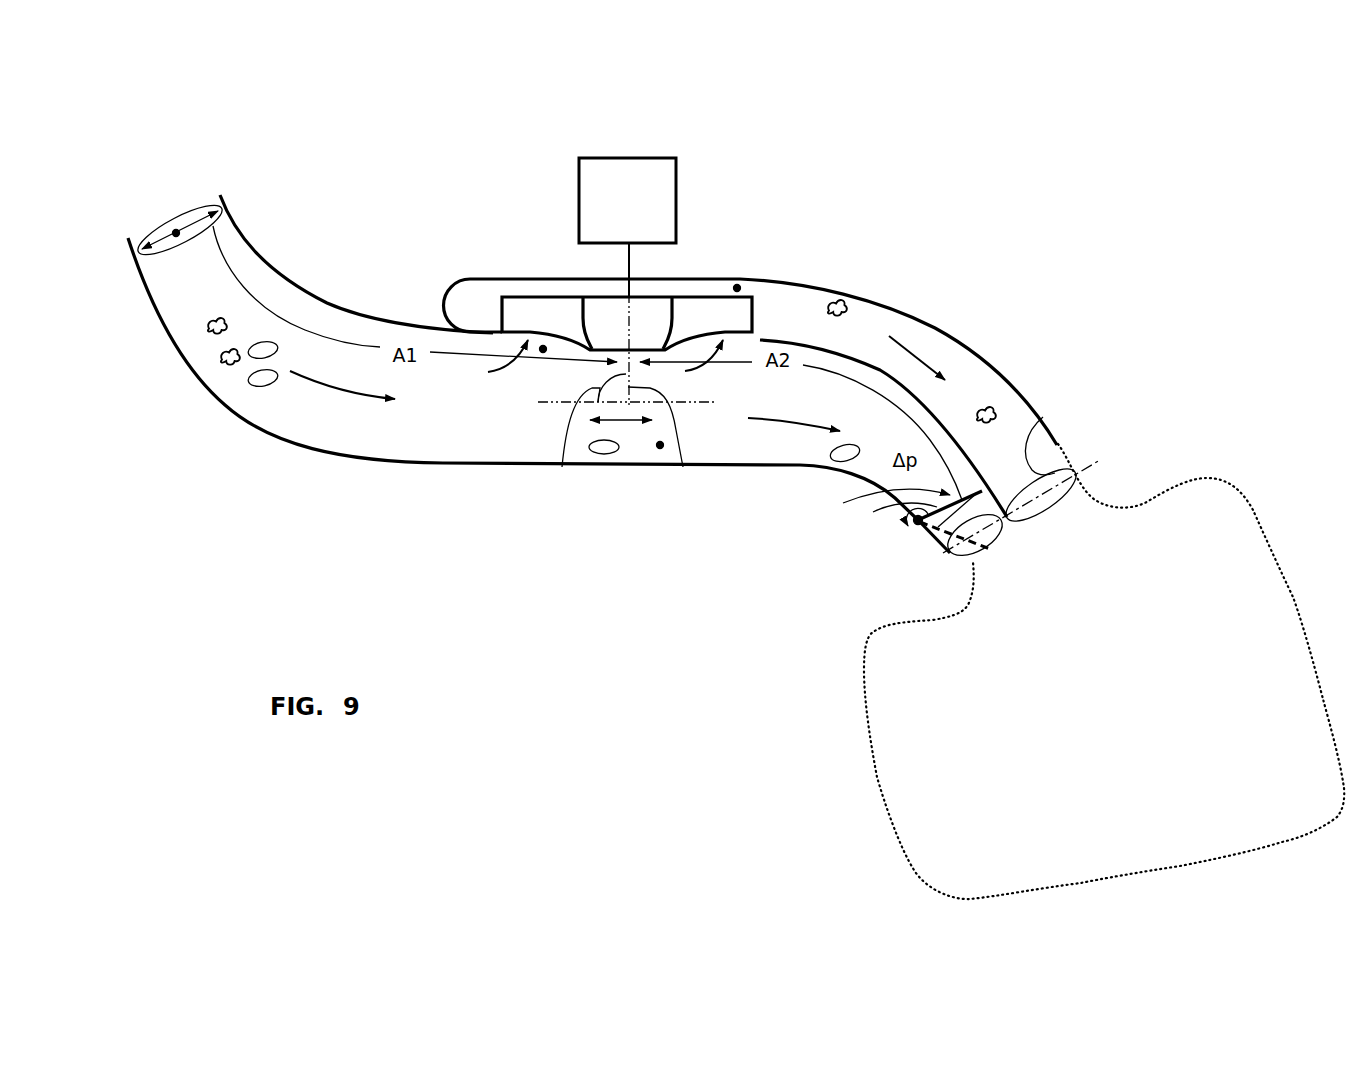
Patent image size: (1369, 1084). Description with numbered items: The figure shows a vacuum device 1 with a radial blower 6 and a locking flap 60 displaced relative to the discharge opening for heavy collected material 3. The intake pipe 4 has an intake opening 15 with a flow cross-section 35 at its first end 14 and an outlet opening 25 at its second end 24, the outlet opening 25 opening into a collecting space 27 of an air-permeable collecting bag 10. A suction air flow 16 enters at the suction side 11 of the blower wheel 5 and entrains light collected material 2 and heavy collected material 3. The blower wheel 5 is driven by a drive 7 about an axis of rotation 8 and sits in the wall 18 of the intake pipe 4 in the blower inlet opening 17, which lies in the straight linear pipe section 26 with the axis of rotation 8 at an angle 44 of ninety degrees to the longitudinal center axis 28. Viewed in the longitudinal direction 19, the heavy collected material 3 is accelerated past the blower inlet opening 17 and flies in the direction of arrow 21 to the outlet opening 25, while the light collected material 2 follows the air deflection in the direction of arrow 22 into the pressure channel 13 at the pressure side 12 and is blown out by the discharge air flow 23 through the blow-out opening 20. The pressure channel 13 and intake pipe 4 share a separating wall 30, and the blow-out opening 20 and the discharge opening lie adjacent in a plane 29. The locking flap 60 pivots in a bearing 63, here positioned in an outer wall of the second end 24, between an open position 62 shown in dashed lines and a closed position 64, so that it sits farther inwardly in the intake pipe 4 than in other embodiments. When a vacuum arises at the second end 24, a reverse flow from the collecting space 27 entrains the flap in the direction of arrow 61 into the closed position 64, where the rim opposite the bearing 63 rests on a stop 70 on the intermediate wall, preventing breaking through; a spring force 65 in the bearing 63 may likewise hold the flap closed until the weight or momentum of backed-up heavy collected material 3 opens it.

The vacuum device 1 is at (337, 267).
The light collected material 2 is at (223, 368).
The heavy collected material 3 is at (258, 380).
The intake pipe 4 is at (428, 403).
The blower wheel 5 is at (645, 307).
The radial blower 6 is at (575, 258).
The drive 7 is at (676, 173).
The axis of rotation 8 is at (684, 466).
The collecting bag 10 is at (899, 770).
The suction side 11 is at (543, 349).
The pressure side 12 is at (737, 288).
The pressure channel 13 is at (967, 390).
The first end 14 is at (172, 263).
The intake opening 15 is at (190, 215).
The suction air flow 16 is at (330, 395).
The blower inlet opening 17 is at (497, 330).
The wall 18 is at (378, 330).
The longitudinal direction 19 is at (628, 422).
The blow-out opening 20 is at (1043, 417).
The arrow 21 is at (800, 420).
The arrow 22 is at (500, 365).
The discharge air flow 23 is at (925, 350).
The second end 24 is at (945, 538).
The outlet opening 25 is at (968, 560).
The straight linear pipe section 26 is at (660, 447).
The collecting space 27 is at (1104, 671).
The longitudinal center axis 28 is at (708, 405).
The plane 29 is at (1086, 467).
The separating wall 30 is at (855, 352).
The flow cross-section 35 is at (174, 231).
The angle 44 is at (563, 463).
The locking flap 60 is at (886, 521).
The arrow 61 is at (996, 559).
The open position 62 is at (1012, 560).
The bearing 63 is at (916, 528).
The closed position 64 is at (872, 497).
The spring force 65 is at (912, 522).
The stop 70 is at (1027, 497).